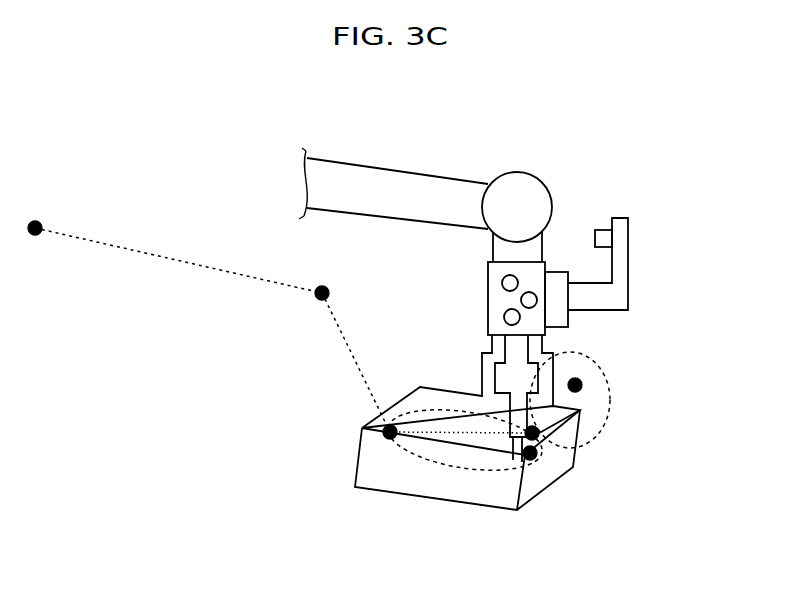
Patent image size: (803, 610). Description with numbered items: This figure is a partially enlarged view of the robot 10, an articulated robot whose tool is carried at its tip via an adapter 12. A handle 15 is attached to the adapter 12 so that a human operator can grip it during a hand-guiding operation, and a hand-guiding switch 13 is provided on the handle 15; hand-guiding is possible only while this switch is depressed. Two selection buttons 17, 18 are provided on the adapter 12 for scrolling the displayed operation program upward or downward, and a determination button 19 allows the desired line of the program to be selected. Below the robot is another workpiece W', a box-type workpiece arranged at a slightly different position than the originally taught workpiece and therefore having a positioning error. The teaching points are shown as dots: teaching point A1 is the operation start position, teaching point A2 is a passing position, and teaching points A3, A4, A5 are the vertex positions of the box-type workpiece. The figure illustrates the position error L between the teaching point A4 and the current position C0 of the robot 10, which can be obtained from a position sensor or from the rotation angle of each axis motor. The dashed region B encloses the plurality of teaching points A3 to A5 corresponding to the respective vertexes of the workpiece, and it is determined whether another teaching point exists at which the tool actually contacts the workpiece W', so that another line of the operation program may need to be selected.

The robot 10 is at (396, 156).
The adapter 12 is at (489, 302).
The hand-guiding switch 13 is at (603, 230).
The handle 15 is at (623, 255).
The selection button 17 is at (503, 277).
The selection button 18 is at (505, 321).
The determination button 19 is at (535, 293).
The workpiece W' is at (467, 483).
The position error L is at (577, 468).
The region B is at (592, 355).
The teaching point A1 is at (35, 236).
The teaching point A2 is at (318, 300).
The teaching point A3 is at (383, 437).
The teaching point A4 is at (538, 428).
The teaching point A5 is at (583, 385).
The current position C0 is at (531, 460).